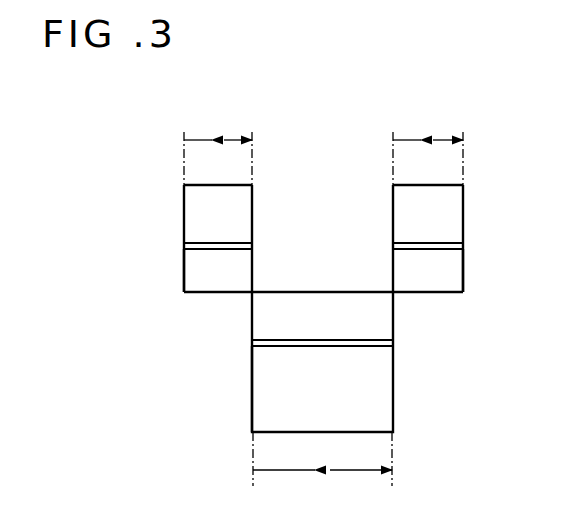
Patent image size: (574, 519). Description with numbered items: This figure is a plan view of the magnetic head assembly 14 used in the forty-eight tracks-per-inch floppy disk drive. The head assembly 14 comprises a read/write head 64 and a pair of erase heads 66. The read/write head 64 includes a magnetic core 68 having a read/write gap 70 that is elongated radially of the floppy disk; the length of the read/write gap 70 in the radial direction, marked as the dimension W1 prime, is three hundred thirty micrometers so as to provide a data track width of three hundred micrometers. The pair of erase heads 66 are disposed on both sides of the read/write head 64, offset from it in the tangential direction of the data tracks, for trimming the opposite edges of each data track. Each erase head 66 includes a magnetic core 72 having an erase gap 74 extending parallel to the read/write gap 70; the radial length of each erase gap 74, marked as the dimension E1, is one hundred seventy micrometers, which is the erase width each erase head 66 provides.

The magnetic head assembly 14 is at (150, 178).
The read/write head 64 is at (410, 392).
The erase heads 66 is at (170, 222).
The magnetic core 68 is at (257, 363).
The read/write gap 70 is at (391, 337).
The magnetic core 72 is at (191, 268).
The erase gap 74 is at (238, 246).